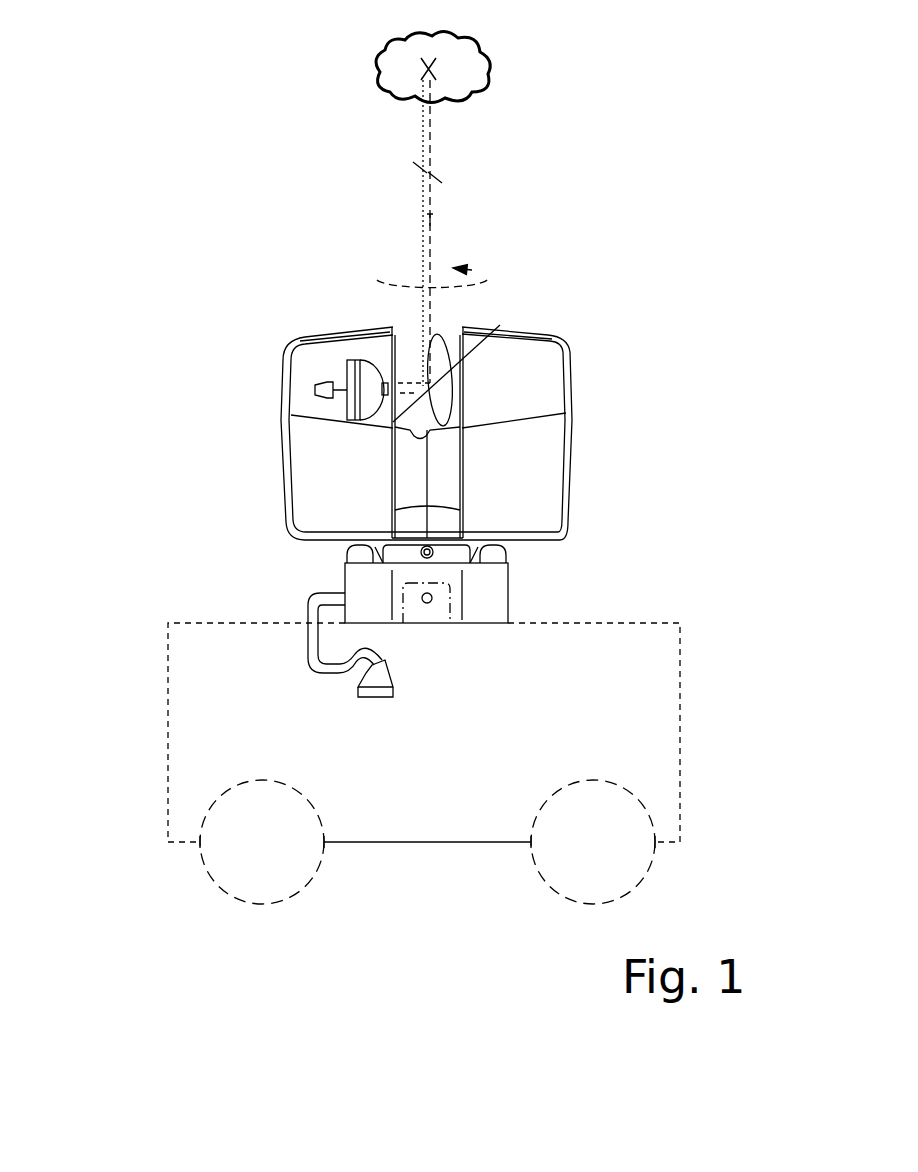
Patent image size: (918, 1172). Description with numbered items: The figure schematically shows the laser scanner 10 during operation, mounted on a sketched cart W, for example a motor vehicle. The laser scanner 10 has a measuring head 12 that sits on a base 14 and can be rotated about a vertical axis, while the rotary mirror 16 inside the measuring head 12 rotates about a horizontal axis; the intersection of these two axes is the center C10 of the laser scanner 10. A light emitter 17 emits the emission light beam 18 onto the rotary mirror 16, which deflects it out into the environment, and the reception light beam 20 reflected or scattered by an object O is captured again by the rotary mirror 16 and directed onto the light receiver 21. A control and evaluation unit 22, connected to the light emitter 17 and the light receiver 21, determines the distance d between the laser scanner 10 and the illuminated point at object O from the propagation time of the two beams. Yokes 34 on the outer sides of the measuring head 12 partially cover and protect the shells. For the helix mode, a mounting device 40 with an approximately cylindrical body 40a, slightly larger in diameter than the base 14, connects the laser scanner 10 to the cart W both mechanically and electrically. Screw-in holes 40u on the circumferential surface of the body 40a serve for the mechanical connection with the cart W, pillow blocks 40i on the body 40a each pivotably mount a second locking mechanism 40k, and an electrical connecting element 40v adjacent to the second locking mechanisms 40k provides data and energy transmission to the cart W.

The object O is at (493, 72).
The reception light beam 20 is at (422, 133).
The emission light beam 18 is at (430, 220).
The distance d is at (405, 223).
The laser scanner 10 is at (456, 410).
The measuring head 12 is at (456, 433).
The yoke 34 is at (282, 492).
The rotary mirror 16 is at (439, 406).
The center C10 is at (425, 383).
The light emitter 17 is at (301, 369).
The light receiver 21 is at (350, 408).
The control and evaluation unit 22 is at (317, 388).
The base 14 is at (365, 554).
The second locking mechanism 40k is at (357, 545).
The mounting device 40 is at (421, 620).
The body 40a is at (490, 598).
The screw-in hole 40u is at (432, 600).
The pillow block 40i is at (358, 557).
The electrical connecting element 40v is at (345, 597).
The cart W is at (250, 762).